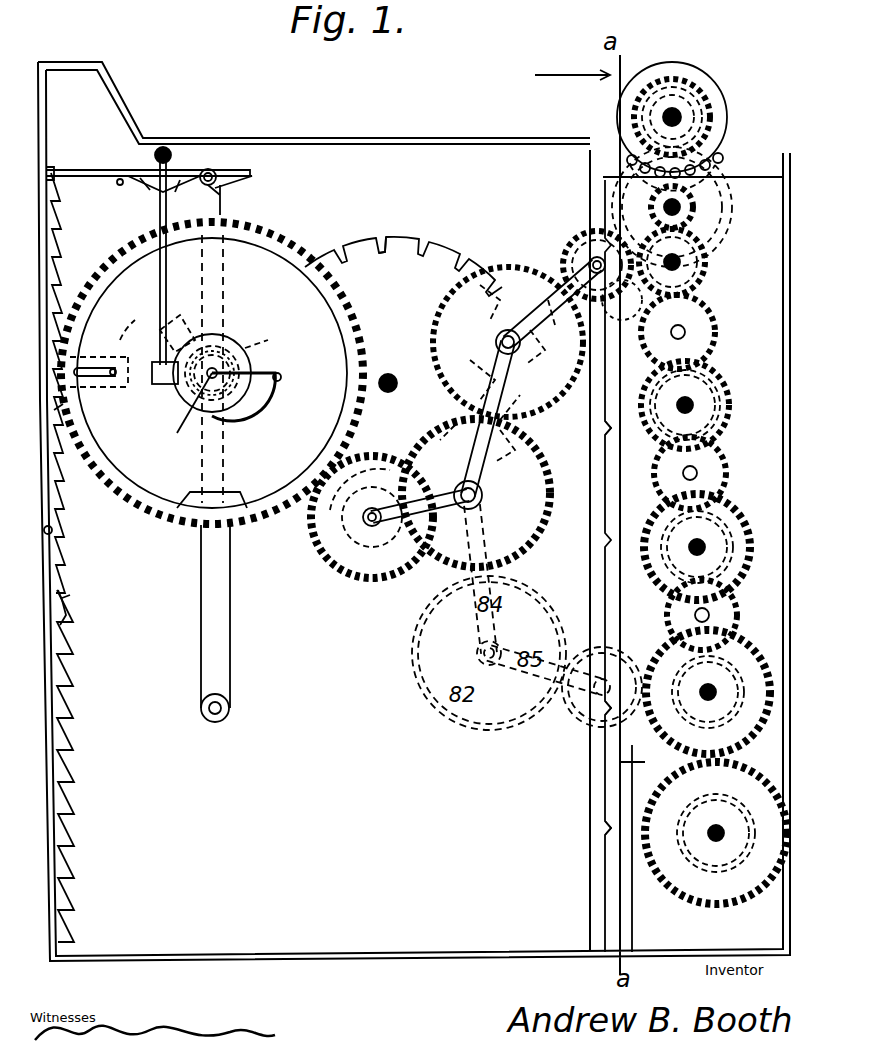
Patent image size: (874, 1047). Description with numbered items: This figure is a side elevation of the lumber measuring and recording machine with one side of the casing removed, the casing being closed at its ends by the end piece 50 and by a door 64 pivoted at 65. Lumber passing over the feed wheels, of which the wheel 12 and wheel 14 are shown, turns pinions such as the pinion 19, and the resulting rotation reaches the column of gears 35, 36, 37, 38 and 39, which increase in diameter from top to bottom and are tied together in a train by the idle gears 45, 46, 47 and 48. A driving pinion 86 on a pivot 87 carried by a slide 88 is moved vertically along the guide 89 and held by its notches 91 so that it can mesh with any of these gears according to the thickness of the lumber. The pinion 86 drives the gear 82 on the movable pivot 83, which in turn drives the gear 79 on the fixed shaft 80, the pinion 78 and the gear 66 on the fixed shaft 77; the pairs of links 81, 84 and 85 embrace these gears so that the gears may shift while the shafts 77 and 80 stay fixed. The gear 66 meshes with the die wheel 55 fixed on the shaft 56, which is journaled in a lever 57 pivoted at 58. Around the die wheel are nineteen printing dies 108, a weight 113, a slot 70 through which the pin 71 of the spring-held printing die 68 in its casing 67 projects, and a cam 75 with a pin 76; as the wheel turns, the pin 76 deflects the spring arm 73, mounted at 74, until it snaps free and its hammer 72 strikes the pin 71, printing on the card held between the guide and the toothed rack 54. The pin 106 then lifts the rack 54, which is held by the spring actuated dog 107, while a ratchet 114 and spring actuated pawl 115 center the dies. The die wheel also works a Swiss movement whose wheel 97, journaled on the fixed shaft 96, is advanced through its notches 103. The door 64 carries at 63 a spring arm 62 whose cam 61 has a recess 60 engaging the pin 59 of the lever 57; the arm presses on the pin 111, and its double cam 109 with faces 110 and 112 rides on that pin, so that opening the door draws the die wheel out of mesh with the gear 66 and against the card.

The wheel 12 is at (695, 215).
The wheel 14 is at (615, 102).
The pinion 19 is at (700, 100).
The gear 35 is at (705, 270).
The gear 36 is at (728, 410).
The gear 37 is at (735, 575).
The gear 38 is at (757, 660).
The gear 39 is at (755, 770).
The idle gear 45 is at (715, 330).
The idle gear 46 is at (655, 475).
The idle gear 47 is at (668, 616).
The idle gear 48 is at (645, 762).
The end piece 50 is at (57, 785).
The toothed rack 54 is at (75, 720).
The die wheel 55 is at (212, 373).
The shaft 56 is at (198, 403).
The lever 57 is at (232, 585).
The pivot 58 is at (229, 708).
The pin 59 is at (212, 172).
The recess 60 is at (220, 195).
The cam 61 is at (250, 180).
The arm 62 is at (92, 168).
The attachment point 63 is at (52, 167).
The door 64 is at (50, 270).
The pivot 65 is at (46, 534).
The gear 66 is at (345, 560).
The casing 67 is at (155, 331).
The printing die 68 is at (623, 304).
The slot 70 is at (95, 368).
The pin 71 is at (100, 384).
The hammer 72 is at (155, 384).
The spring arm 73 is at (160, 275).
The mounting 74 is at (171, 155).
The cam 75 is at (258, 402).
The pin 76 is at (280, 372).
The shaft 77 is at (372, 508).
The pinion 78 is at (372, 528).
The gear 79 is at (425, 440).
The fixed shaft 80 is at (482, 495).
The links 81 is at (420, 506).
The gear 82 is at (508, 343).
The pivot 83 is at (496, 342).
The links 84 is at (495, 376).
The links 85 is at (552, 304).
The driving pinion 86 is at (575, 245).
The pivot 87 is at (594, 258).
The slide 88 is at (588, 703).
The guide 89 is at (590, 467).
The notches 91 is at (605, 708).
The fixed shaft 96 is at (392, 375).
The wheel 97 is at (403, 267).
The notches 103 is at (382, 250).
The pin 106 is at (54, 410).
The spring actuated dog 107 is at (66, 600).
The printing dies 108 is at (290, 235).
The double cam 109 is at (150, 190).
The cam face 110 is at (150, 180).
The pin 111 is at (118, 185).
The cam face 112 is at (175, 192).
The weight 113 is at (212, 504).
The ratchet 114 is at (243, 356).
The spring actuated pawl 115 is at (215, 320).